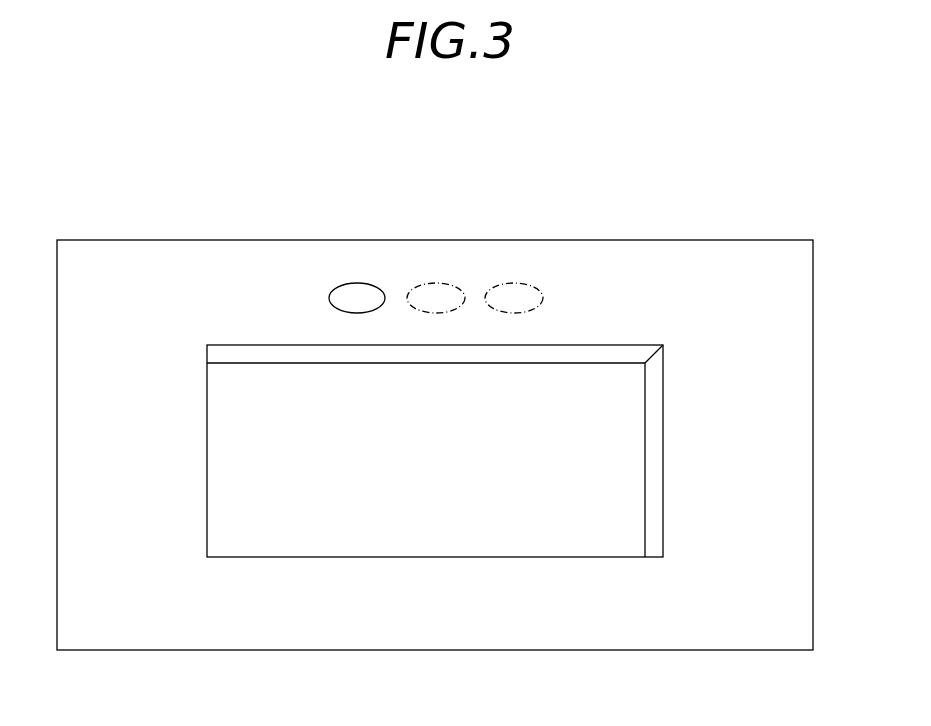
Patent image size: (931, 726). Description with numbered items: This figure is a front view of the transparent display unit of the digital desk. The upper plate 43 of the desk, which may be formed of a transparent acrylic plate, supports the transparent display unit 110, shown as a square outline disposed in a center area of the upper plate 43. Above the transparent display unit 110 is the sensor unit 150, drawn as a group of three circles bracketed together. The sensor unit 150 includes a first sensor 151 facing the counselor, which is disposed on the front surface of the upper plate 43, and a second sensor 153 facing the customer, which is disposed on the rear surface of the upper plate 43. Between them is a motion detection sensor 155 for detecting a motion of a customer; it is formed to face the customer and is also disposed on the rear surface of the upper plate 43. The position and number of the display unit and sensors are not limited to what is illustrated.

The upper plate 43 is at (708, 240).
The transparent display unit 110 is at (443, 543).
The sensor unit 150 is at (333, 178).
The first sensor 151 is at (357, 283).
The second sensor 153 is at (513, 283).
The motion detection sensor 155 is at (435, 283).